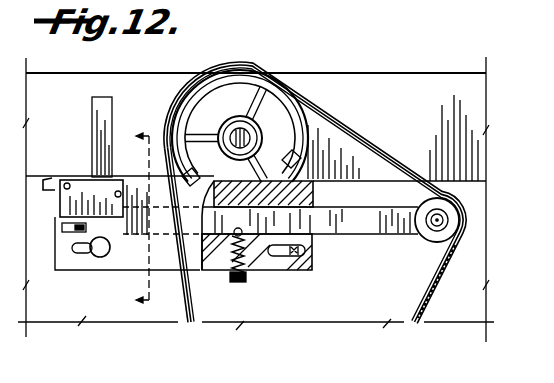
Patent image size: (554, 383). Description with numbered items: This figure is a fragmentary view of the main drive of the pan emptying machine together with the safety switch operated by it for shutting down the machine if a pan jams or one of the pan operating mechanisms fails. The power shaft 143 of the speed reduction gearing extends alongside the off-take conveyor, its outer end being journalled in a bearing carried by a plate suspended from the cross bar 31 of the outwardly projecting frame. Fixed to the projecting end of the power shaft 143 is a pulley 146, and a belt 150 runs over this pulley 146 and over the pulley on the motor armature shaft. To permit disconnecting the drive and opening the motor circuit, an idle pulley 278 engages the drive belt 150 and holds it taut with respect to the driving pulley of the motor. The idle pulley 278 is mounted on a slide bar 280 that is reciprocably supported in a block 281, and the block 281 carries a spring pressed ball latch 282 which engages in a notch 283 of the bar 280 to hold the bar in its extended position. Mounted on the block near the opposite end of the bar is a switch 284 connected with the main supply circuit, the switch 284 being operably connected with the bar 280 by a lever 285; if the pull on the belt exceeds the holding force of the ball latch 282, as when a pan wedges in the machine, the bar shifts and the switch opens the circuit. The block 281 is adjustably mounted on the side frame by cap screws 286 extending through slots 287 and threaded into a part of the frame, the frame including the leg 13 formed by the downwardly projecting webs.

The cross bar 31 is at (414, 96).
The pulley 146 is at (231, 82).
The power shaft 143 is at (238, 137).
The belt 150 is at (293, 94).
The idle pulley 278 is at (452, 222).
The slide bar 280 is at (388, 236).
The block 281 is at (307, 271).
The spring pressed ball latch 282 is at (228, 272).
The notch 283 is at (266, 271).
The switch 284 is at (45, 179).
The lever 285 is at (70, 233).
The cap screws 286 is at (104, 258).
The slots 287 is at (87, 254).
The leg 13 is at (125, 221).